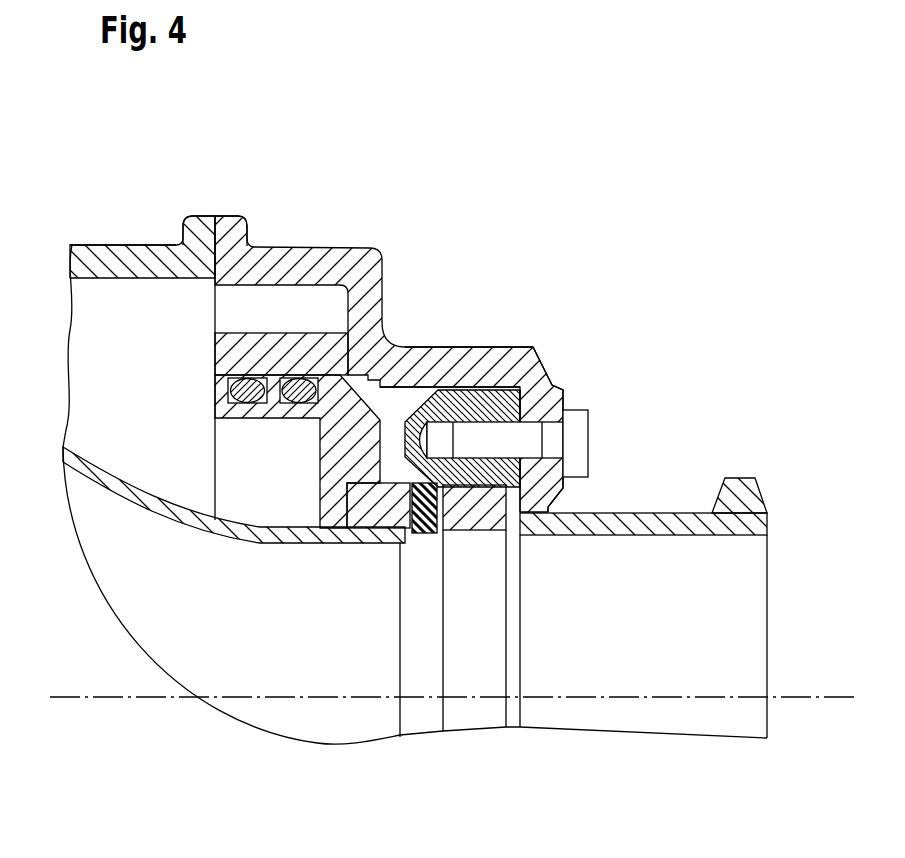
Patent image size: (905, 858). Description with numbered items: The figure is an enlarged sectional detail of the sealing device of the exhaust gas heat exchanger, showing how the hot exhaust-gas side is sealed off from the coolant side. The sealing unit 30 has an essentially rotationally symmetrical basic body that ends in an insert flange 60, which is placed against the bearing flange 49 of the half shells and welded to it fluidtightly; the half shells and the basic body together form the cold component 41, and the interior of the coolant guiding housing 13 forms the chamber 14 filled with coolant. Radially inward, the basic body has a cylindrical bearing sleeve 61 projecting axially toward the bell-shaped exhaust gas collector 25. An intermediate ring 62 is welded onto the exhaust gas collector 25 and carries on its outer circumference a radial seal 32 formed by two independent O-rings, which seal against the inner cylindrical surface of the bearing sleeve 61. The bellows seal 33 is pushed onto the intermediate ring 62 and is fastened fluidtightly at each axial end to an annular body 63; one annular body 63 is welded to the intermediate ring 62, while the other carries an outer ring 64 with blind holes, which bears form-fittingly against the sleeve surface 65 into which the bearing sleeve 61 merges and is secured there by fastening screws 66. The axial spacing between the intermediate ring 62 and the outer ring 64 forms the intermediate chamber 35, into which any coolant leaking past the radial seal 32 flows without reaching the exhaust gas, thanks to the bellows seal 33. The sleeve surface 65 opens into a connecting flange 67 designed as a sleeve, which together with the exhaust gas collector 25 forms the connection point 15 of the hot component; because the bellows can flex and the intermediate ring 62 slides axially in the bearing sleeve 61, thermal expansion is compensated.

The coolant guiding housing 13 is at (96, 200).
The chamber 14 is at (100, 312).
The connection point 15 is at (769, 490).
The bell-shaped exhaust gas collector 25 is at (143, 505).
The sealing unit 30 is at (433, 300).
The radial seal 32 is at (258, 405).
The bellows seal 33 is at (433, 535).
The intermediate chamber 35 is at (397, 345).
The cold component 41 is at (270, 211).
The bearing flange 49 is at (193, 213).
The insert flange 60 is at (231, 227).
The bearing sleeve 61 is at (232, 358).
The intermediate ring 62 is at (327, 517).
The annular body 63 is at (373, 510).
The outer ring 64 is at (473, 400).
The sleeve surface 65 is at (540, 397).
The fastening screw 66 is at (578, 445).
The connecting flange 67 is at (608, 537).